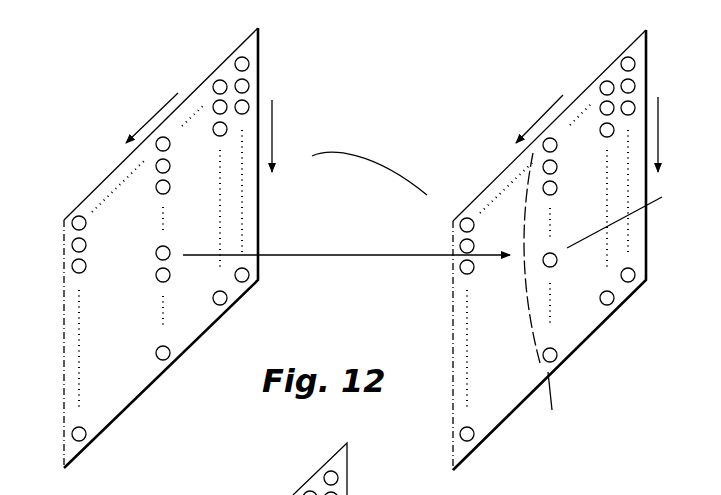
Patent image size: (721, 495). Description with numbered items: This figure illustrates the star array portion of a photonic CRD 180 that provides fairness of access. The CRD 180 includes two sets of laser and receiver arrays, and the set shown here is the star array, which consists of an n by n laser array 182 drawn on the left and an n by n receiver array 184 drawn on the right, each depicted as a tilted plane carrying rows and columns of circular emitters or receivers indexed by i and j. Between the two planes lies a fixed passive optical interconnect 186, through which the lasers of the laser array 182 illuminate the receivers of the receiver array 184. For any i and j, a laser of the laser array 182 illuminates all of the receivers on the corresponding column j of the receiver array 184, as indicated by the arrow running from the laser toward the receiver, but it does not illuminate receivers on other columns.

The photonic CRD 180 is at (516, 62).
The laser array 182 is at (63, 286).
The receiver array 184 is at (631, 297).
The passive optical interconnect 186 is at (385, 163).